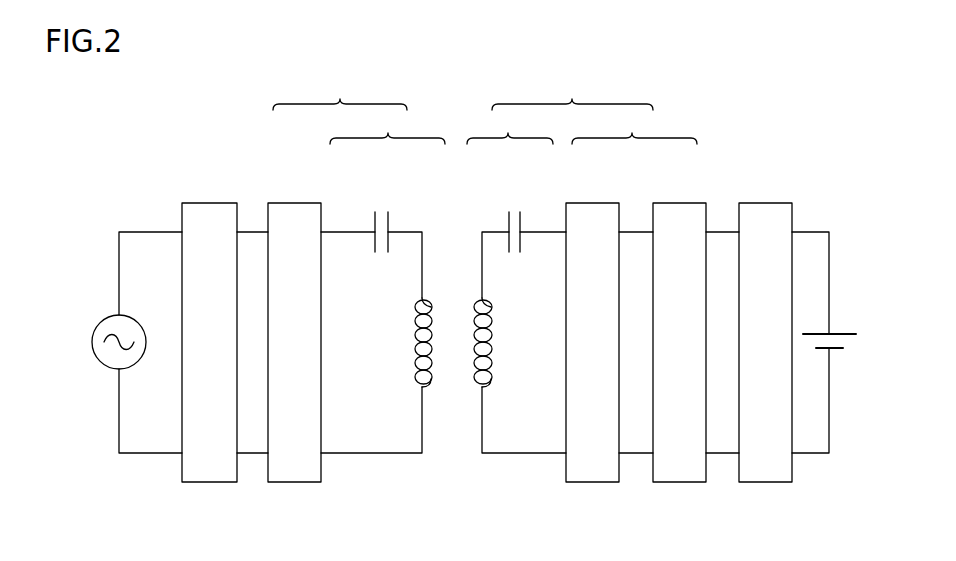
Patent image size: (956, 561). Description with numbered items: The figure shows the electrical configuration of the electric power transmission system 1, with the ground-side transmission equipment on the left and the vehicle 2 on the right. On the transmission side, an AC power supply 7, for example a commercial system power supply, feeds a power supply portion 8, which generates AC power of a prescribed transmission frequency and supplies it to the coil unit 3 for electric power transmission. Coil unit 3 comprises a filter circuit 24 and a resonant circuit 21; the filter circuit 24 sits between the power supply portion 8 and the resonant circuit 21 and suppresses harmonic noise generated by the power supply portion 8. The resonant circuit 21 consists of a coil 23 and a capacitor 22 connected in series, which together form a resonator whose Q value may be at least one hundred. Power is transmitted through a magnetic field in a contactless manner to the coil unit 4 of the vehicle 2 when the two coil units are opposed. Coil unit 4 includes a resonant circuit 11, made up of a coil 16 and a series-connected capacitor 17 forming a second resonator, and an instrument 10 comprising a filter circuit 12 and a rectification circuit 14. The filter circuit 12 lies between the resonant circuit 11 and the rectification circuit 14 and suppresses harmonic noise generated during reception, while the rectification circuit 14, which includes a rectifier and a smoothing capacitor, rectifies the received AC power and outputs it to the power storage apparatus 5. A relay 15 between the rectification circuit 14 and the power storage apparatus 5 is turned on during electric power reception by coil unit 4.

The electric power transmission system 1 is at (148, 68).
The vehicle 2 is at (723, 110).
The coil unit for electric power transmission 3 is at (340, 92).
The coil unit for electric power reception 4 is at (572, 92).
The power storage apparatus 5 is at (845, 330).
The alternating-current power supply 7 is at (92, 343).
The power supply portion 8 is at (213, 203).
The instrument 10 is at (634, 126).
The resonant circuit 11 is at (510, 126).
The filter circuit 12 is at (592, 203).
The rectification circuit 14 is at (680, 203).
The relay 15 is at (765, 203).
The coil 16 is at (474, 316).
The capacitor 17 is at (521, 222).
The resonant circuit 21 is at (387, 126).
The capacitor 22 is at (374, 222).
The coil 23 is at (432, 316).
The filter circuit 24 is at (295, 203).